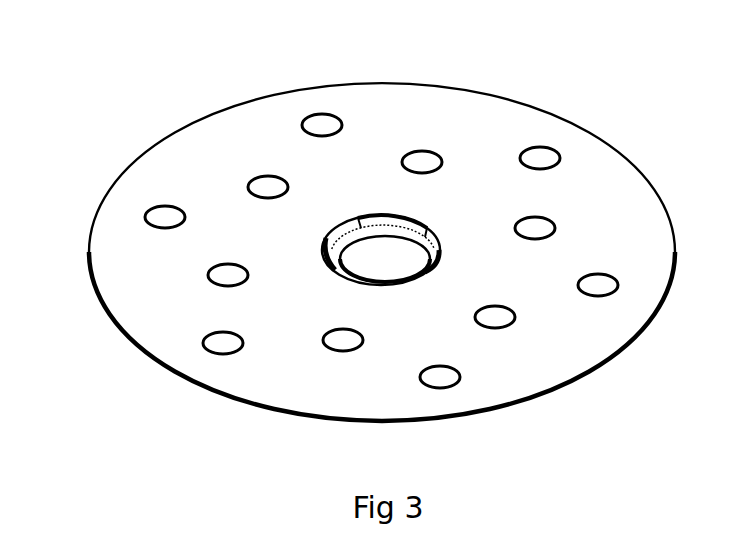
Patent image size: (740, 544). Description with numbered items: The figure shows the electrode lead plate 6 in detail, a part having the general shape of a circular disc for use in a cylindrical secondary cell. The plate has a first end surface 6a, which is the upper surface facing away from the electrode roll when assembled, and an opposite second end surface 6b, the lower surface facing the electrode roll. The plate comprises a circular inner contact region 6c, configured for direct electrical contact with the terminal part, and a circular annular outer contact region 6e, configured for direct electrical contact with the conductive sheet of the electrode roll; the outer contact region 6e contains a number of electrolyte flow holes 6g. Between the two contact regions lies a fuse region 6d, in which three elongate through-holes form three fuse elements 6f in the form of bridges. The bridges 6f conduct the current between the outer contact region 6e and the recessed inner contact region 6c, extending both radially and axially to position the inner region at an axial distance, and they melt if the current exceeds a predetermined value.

The electrode lead plate 6 is at (75, 60).
The first end surface 6a is at (110, 222).
The second end surface 6b is at (112, 340).
The inner contact region 6c is at (387, 253).
The fuse region 6d is at (440, 228).
The outer contact region 6e is at (600, 192).
The fuse element 6f is at (348, 229).
The electrolyte flow hole 6g is at (217, 340).